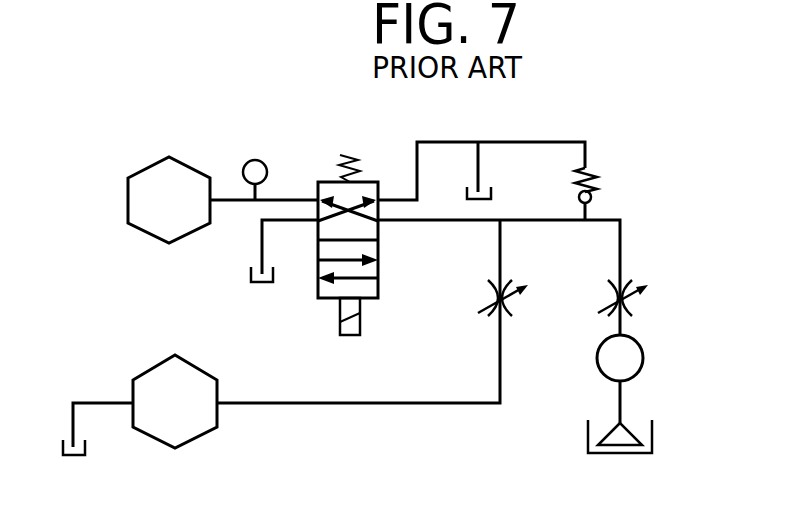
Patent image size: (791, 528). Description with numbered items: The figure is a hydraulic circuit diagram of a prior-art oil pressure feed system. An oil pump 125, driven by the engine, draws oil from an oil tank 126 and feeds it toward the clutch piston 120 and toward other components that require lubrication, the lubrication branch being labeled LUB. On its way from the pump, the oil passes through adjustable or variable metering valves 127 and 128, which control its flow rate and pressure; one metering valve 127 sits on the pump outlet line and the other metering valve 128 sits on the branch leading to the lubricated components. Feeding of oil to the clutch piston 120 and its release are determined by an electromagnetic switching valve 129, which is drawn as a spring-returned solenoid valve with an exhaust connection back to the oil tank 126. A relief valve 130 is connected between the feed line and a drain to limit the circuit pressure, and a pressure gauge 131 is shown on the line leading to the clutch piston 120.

The clutch piston 120 is at (153, 166).
The oil pump 125 is at (644, 357).
The oil tank 126 is at (250, 272).
The adjustable metering valve 127 is at (640, 302).
The adjustable metering valve 128 is at (510, 305).
The electromagnetic switching valve 129 is at (378, 290).
The relief valve 130 is at (632, 188).
The pressure gauge 131 is at (258, 160).